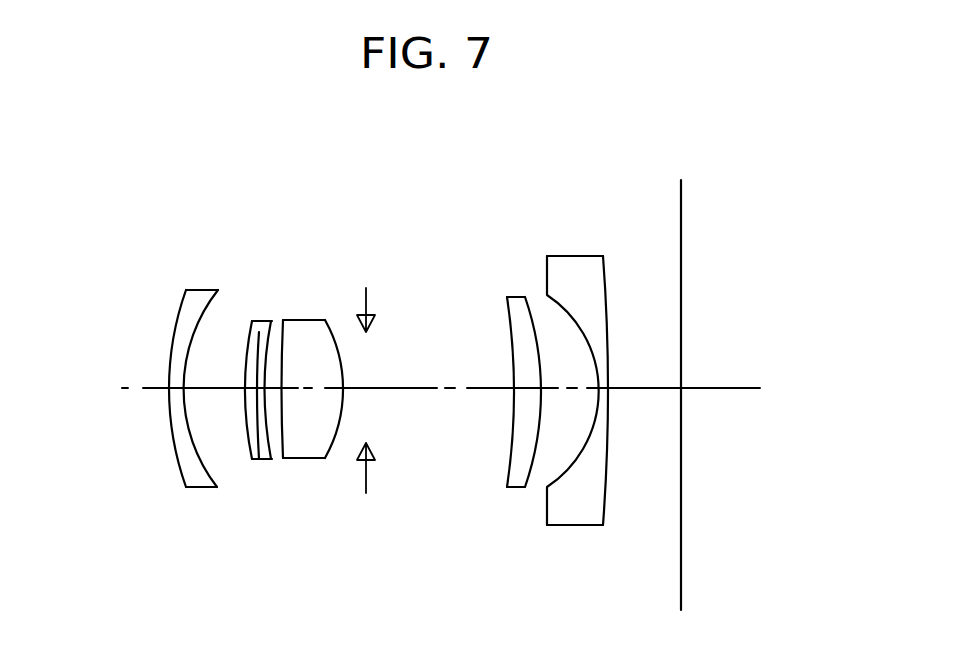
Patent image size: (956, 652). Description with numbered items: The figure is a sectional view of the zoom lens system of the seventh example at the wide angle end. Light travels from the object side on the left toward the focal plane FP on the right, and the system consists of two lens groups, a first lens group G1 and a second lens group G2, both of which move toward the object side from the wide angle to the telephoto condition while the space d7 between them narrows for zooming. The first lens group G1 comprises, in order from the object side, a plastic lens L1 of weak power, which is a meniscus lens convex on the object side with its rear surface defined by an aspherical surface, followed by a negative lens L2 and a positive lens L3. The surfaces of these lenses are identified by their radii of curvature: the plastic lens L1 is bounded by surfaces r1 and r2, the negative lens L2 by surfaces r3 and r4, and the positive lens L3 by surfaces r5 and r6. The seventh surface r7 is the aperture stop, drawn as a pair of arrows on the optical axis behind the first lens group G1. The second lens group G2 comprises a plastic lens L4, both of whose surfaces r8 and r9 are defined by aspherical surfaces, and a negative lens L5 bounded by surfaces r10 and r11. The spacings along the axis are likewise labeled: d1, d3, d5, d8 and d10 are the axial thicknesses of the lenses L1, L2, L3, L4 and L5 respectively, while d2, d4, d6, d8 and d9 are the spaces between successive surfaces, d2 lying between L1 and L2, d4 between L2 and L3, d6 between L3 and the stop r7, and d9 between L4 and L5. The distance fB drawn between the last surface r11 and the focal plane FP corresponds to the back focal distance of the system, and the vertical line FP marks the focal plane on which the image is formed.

The first lens group G1 is at (368, 192).
The second lens group G2 is at (622, 195).
The plastic lens L1 is at (187, 338).
The negative lens L2 is at (265, 324).
The positive lens L3 is at (327, 324).
The plastic lens L4 is at (497, 338).
The negative lens L5 is at (604, 357).
The radius of curvature of first lens surface r1 is at (183, 313).
The radius of curvature of second lens surface r2 is at (208, 305).
The radius of curvature of third lens surface r3 is at (249, 338).
The radius of curvature of fourth lens surface r4 is at (255, 333).
The radius of curvature of fifth lens surface r5 is at (292, 338).
The radius of curvature of sixth lens surface r6 is at (326, 322).
The stop r7 is at (367, 346).
The radius of curvature of eighth lens surface r8 is at (507, 323).
The radius of curvature of ninth lens surface r9 is at (527, 316).
The radius of curvature of tenth lens surface r10 is at (563, 305).
The radius of curvature of eleventh lens surface r11 is at (610, 286).
The space between lens surfaces d1 is at (177, 412).
The space between lens surfaces d2 is at (219, 414).
The space between lens surfaces d3 is at (257, 460).
The space between lens surfaces d4 is at (274, 322).
The space between lens surfaces d5 is at (299, 414).
The space between lens surfaces d6 is at (349, 390).
The space between lens groups d7 is at (420, 416).
The space between lens surfaces d8 is at (527, 390).
The space between lens surfaces d9 is at (565, 418).
The space between lens surfaces d10 is at (603, 396).
The focal plane FP is at (682, 203).
The back focal distance fB is at (670, 390).